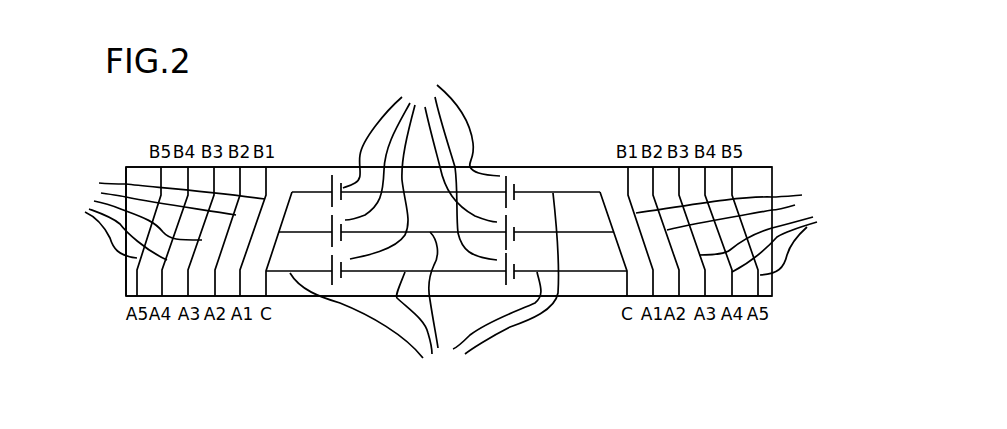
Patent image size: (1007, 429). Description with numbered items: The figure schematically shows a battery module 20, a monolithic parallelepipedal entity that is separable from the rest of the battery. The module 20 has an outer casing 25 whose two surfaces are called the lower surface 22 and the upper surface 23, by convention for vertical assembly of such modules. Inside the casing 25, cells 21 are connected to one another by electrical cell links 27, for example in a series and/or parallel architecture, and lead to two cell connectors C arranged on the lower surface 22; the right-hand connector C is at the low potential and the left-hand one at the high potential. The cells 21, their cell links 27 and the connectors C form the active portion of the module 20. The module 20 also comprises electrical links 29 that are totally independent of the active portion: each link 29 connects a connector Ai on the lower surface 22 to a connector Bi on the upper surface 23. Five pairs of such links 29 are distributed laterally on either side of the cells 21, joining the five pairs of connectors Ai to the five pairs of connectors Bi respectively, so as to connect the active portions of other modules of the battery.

The battery module 20 is at (761, 148).
The cells 21 is at (421, 160).
The lower surface 22 is at (574, 297).
The upper surface 23 is at (577, 167).
The outer casing 25 is at (126, 283).
The electrical cell links 27 is at (424, 291).
The electrical links 29 is at (457, 224).